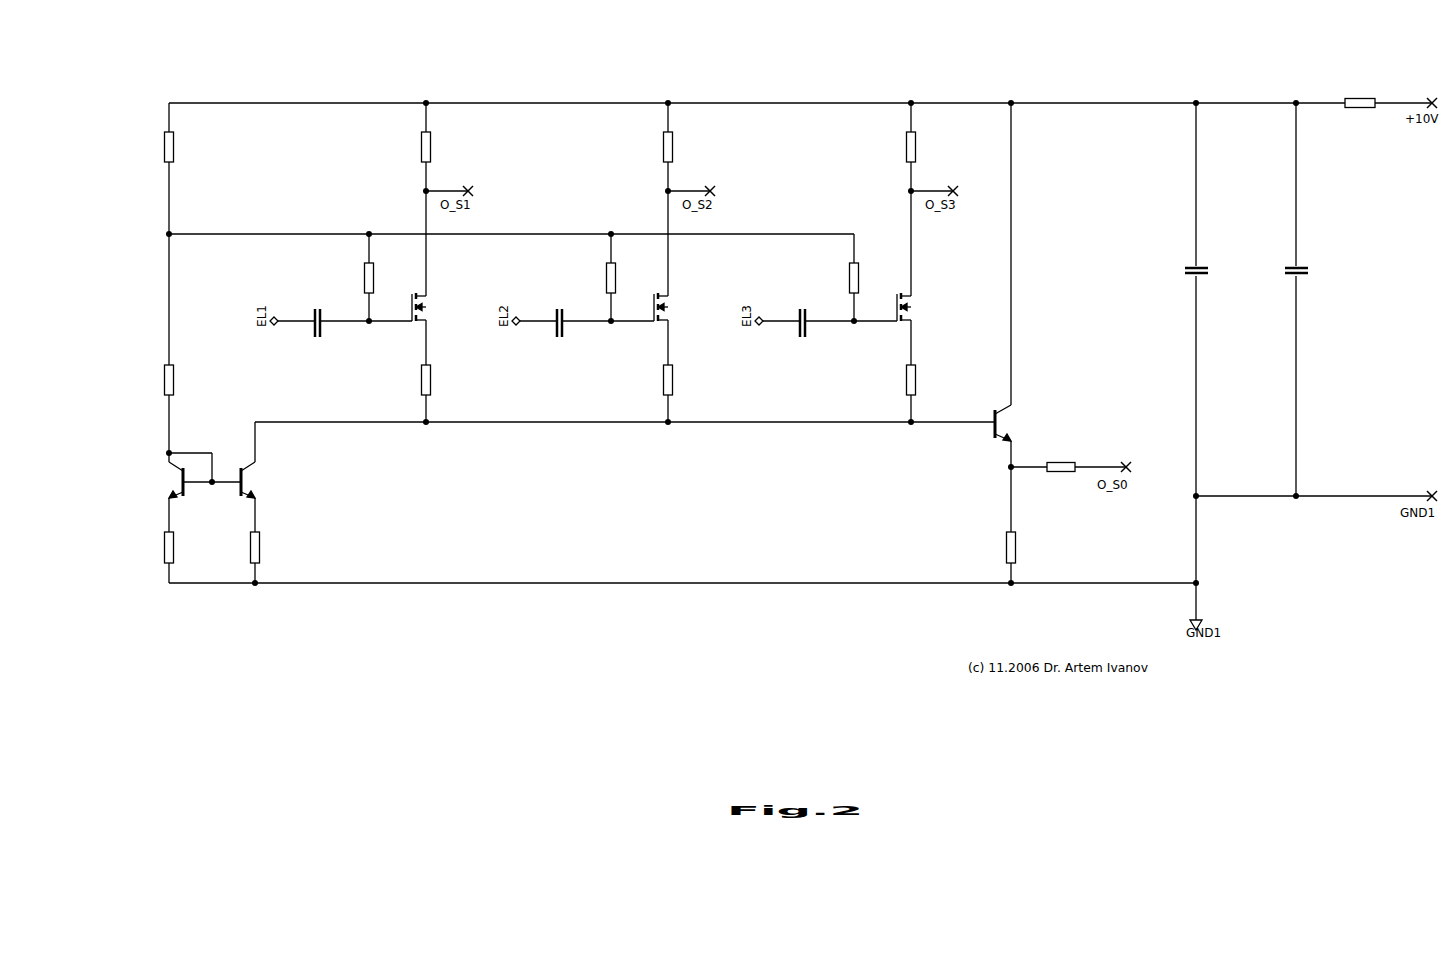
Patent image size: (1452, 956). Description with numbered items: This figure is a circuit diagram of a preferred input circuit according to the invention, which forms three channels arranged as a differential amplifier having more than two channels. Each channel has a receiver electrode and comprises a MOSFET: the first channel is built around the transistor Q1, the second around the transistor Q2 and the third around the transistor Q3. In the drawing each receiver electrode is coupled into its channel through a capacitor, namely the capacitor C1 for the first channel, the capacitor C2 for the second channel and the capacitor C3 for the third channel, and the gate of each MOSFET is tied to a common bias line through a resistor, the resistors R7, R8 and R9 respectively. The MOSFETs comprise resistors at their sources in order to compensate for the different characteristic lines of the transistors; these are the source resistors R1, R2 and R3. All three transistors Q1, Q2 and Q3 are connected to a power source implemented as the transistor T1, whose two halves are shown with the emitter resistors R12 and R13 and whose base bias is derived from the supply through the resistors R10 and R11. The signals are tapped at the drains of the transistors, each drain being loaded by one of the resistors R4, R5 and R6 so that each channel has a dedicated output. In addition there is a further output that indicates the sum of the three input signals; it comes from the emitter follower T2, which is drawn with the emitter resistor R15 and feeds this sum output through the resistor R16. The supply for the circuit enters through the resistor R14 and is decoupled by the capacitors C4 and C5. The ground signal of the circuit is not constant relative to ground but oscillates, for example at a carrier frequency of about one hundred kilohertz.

The source resistor 1k R1 is at (427, 380).
The source resistor 1k R2 is at (669, 380).
The source resistor 1k R3 is at (912, 380).
The drain resistor 1k R4 is at (427, 147).
The drain resistor 1k R5 is at (669, 147).
The drain resistor 1k R6 is at (912, 147).
The gate bias resistor 10M R7 is at (370, 279).
The gate bias resistor 10M R8 is at (612, 279).
The gate bias resistor 10M R9 is at (855, 279).
The bias resistor 2k2 R10 is at (170, 149).
The bias resistor 1k R11 is at (170, 382).
The emitter resistor 100 R12 is at (170, 549).
The emitter resistor 100 R13 is at (256, 549).
The supply resistor 100 R14 is at (1357, 105).
The emitter resistor 100k R15 is at (1012, 551).
The output resistor 33k R16 is at (1057, 468).
The coupling capacitor 4n7 C1 is at (320, 314).
The coupling capacitor 4n7 C2 is at (562, 314).
The coupling capacitor 4n7 C3 is at (805, 314).
The decoupling capacitor 470n C4 is at (1230, 273).
The decoupling capacitor 470n C5 is at (1330, 273).
The transistor Q1 is at (445, 308).
The transistor Q2 is at (687, 308).
The transistor Q3 is at (930, 308).
The power source T1 is at (212, 455).
The emitter follower T2 is at (975, 405).